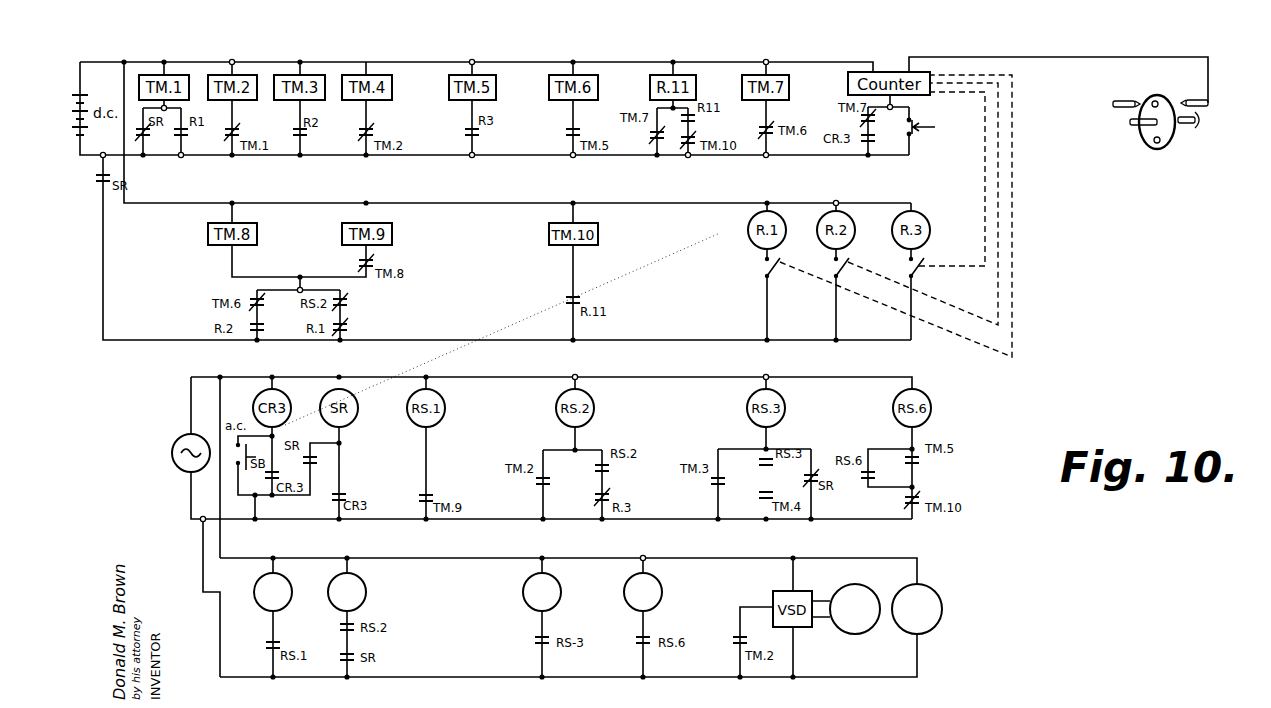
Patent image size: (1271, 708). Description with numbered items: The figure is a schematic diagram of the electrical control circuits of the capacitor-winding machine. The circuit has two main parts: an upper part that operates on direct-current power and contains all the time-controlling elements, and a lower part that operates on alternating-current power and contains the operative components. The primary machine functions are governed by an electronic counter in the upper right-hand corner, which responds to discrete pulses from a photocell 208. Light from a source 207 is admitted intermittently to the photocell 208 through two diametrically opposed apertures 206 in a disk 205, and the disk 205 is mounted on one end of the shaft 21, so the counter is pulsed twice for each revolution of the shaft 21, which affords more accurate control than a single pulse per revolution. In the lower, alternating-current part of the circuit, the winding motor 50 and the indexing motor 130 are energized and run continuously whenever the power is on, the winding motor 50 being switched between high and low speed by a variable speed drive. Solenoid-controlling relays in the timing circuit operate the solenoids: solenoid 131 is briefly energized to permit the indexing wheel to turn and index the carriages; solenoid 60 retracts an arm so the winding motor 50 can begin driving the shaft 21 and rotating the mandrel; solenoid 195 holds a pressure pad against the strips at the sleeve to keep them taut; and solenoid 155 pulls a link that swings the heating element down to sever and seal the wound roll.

The disk 205 is at (1145, 146).
The apertures 206 is at (1166, 141).
The light source 207 is at (1131, 99).
The photocell 208 is at (1212, 99).
The shaft 21 is at (1142, 128).
The solenoid 131 is at (273, 592).
The solenoid 60 is at (347, 592).
The solenoid 195 is at (542, 592).
The solenoid 155 is at (643, 592).
The winding motor 50 is at (855, 609).
The indexing motor 130 is at (917, 609).